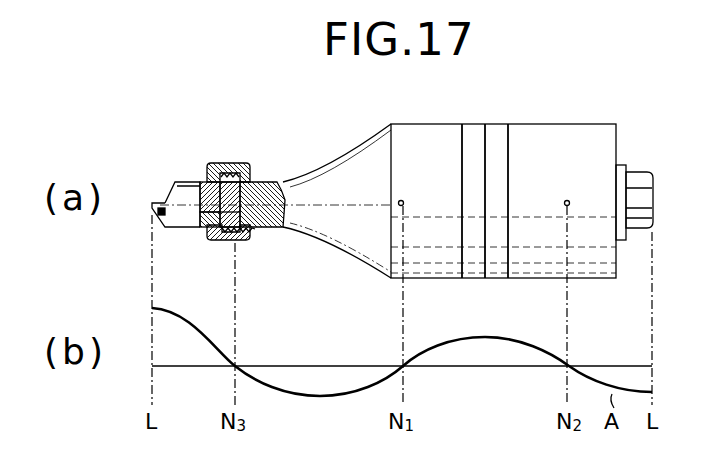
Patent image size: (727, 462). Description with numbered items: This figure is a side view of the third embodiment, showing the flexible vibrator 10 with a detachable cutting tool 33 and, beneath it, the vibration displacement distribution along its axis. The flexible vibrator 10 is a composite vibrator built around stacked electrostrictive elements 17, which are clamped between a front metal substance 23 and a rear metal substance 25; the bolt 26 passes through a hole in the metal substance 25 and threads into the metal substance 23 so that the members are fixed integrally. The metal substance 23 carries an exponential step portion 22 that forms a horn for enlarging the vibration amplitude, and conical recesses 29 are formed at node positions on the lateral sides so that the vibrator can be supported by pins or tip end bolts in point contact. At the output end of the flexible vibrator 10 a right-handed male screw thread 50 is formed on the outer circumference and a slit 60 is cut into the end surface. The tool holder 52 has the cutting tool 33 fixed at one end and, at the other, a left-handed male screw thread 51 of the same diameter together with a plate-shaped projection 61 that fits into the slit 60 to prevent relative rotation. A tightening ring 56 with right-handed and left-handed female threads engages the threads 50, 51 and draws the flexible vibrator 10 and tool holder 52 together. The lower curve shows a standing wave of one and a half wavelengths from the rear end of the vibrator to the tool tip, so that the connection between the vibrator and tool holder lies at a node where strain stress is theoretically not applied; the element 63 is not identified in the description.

The flexible vibrator 10 is at (582, 140).
The electrostrictive element 17 is at (492, 142).
The exponential step portion 22 is at (342, 158).
The metal substance 23 is at (278, 181).
The metal substance 25 is at (605, 138).
The bolt 26 is at (637, 193).
The conical recess 29 is at (401, 200).
The cutting tool 33 is at (160, 207).
The right-handed male screw thread 50 is at (255, 229).
The left-handed male screw thread 51 is at (220, 238).
The tool holder 52 is at (178, 197).
The tightening ring 56 is at (227, 163).
The slit 60 is at (254, 182).
The plate-shaped projection 61 is at (198, 219).
The upper nut portion 63 is at (194, 183).